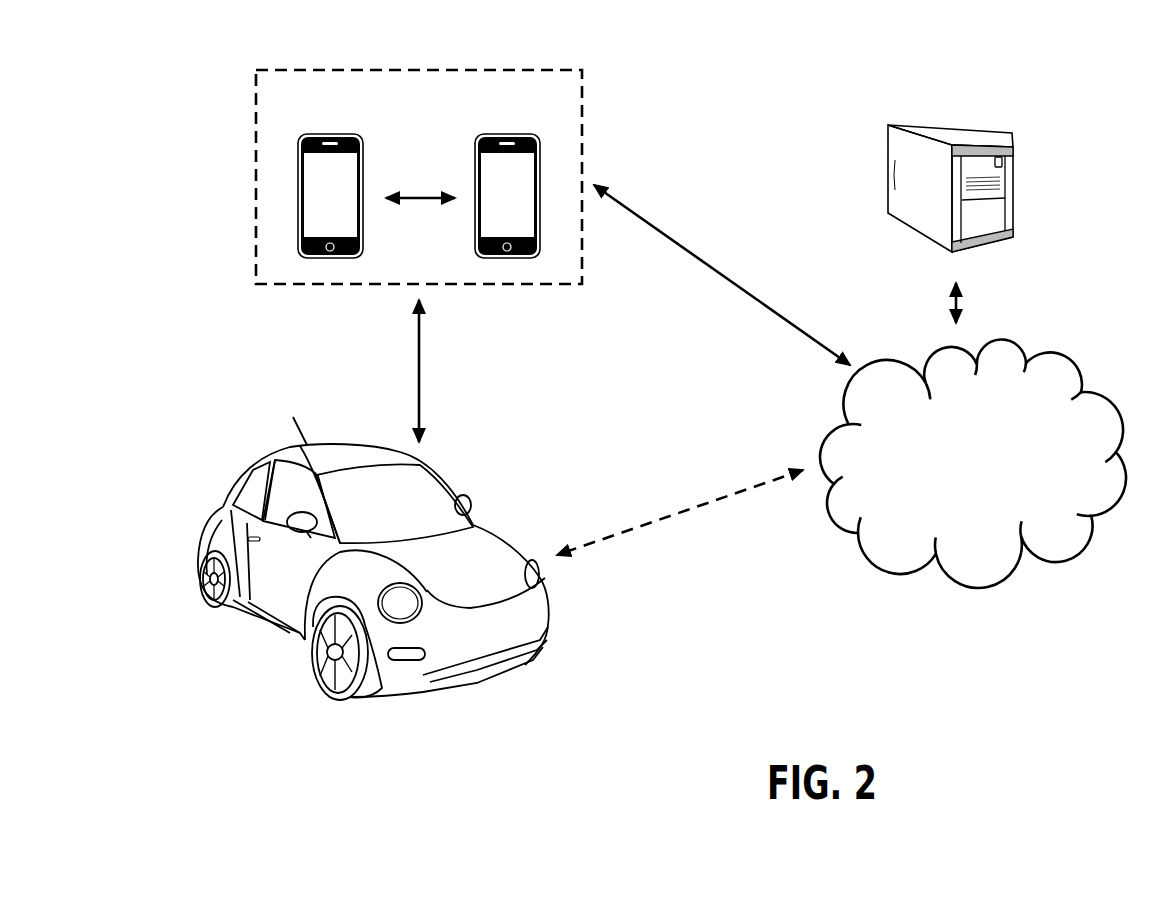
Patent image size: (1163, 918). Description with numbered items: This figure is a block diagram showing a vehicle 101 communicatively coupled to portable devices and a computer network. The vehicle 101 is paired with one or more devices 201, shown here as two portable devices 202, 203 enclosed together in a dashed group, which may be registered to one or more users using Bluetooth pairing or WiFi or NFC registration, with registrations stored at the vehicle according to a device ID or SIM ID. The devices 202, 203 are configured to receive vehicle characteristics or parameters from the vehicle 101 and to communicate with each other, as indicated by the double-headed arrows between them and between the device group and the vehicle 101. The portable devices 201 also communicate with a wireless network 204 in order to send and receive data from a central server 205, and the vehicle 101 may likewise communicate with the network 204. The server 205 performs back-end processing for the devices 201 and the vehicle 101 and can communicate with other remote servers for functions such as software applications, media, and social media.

The vehicle 101 is at (373, 585).
The devices 201 is at (302, 104).
The device 202 is at (330, 182).
The device 203 is at (507, 182).
The wireless network 204 is at (983, 475).
The central server 205 is at (950, 167).